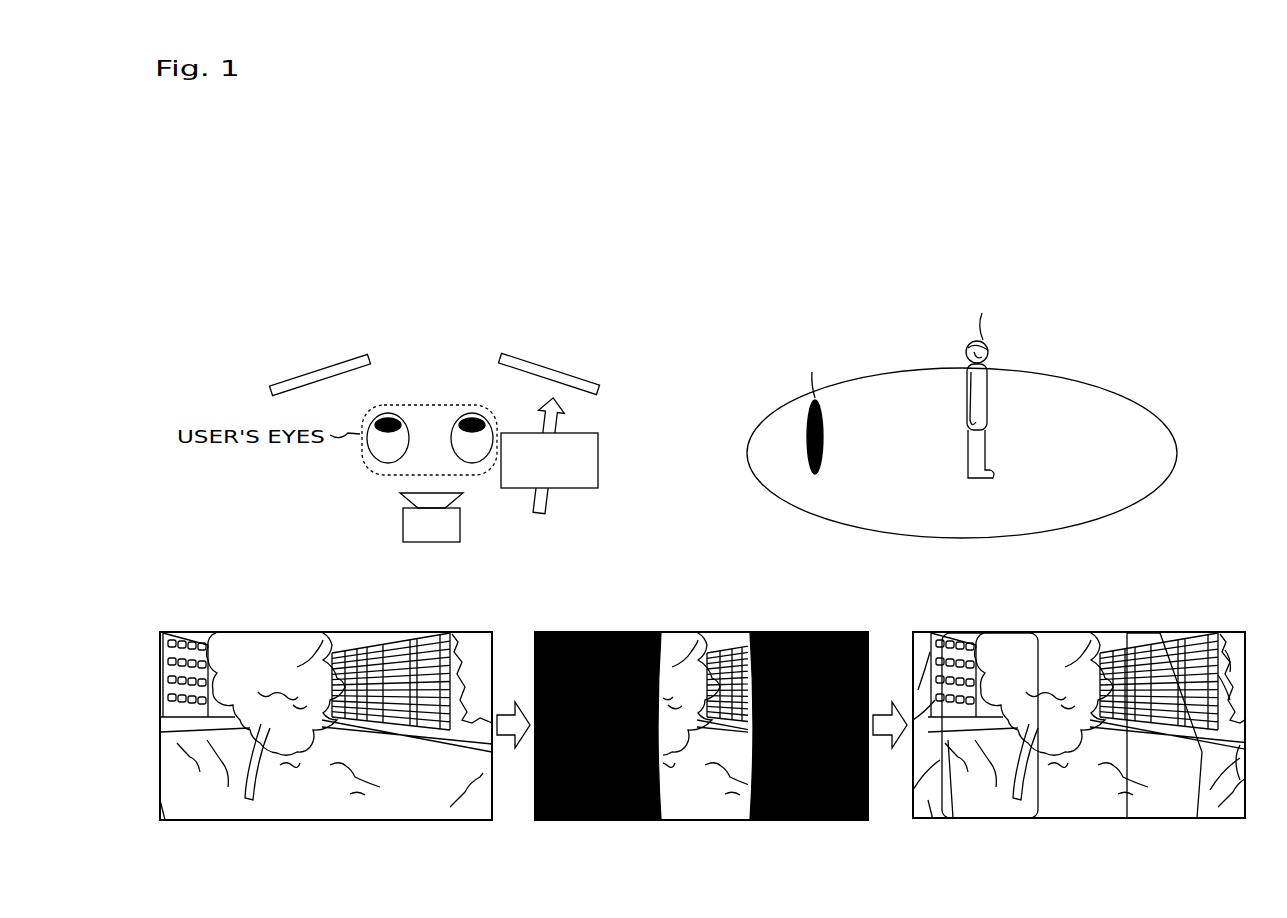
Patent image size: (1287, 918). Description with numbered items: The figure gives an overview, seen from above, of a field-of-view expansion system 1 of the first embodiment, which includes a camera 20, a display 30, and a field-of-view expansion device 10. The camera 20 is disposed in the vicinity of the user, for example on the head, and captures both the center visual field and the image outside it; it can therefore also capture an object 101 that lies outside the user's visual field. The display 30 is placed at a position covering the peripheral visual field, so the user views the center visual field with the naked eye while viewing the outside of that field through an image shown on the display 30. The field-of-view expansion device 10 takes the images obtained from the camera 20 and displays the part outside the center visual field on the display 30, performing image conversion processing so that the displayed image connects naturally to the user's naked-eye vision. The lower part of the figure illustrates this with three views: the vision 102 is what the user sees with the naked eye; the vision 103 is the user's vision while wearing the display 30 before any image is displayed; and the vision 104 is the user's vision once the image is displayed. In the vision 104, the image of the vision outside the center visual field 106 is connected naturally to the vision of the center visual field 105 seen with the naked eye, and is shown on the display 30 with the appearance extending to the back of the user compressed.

The field-of-view expansion system 1 is at (520, 276).
The display 30 is at (348, 359).
The field-of-view expansion device 10 is at (598, 452).
The camera 20 is at (403, 518).
The object outside the visual field of the user 101 is at (1077, 362).
The vision viewed with the naked eye 102 is at (326, 739).
The vision with display worn and no image displayed 103 is at (701, 738).
The vision with image displayed on the display 104 is at (1086, 728).
The vision of the center visual field 105 is at (1068, 638).
The image of the vision outside the center visual field 106 is at (983, 812).